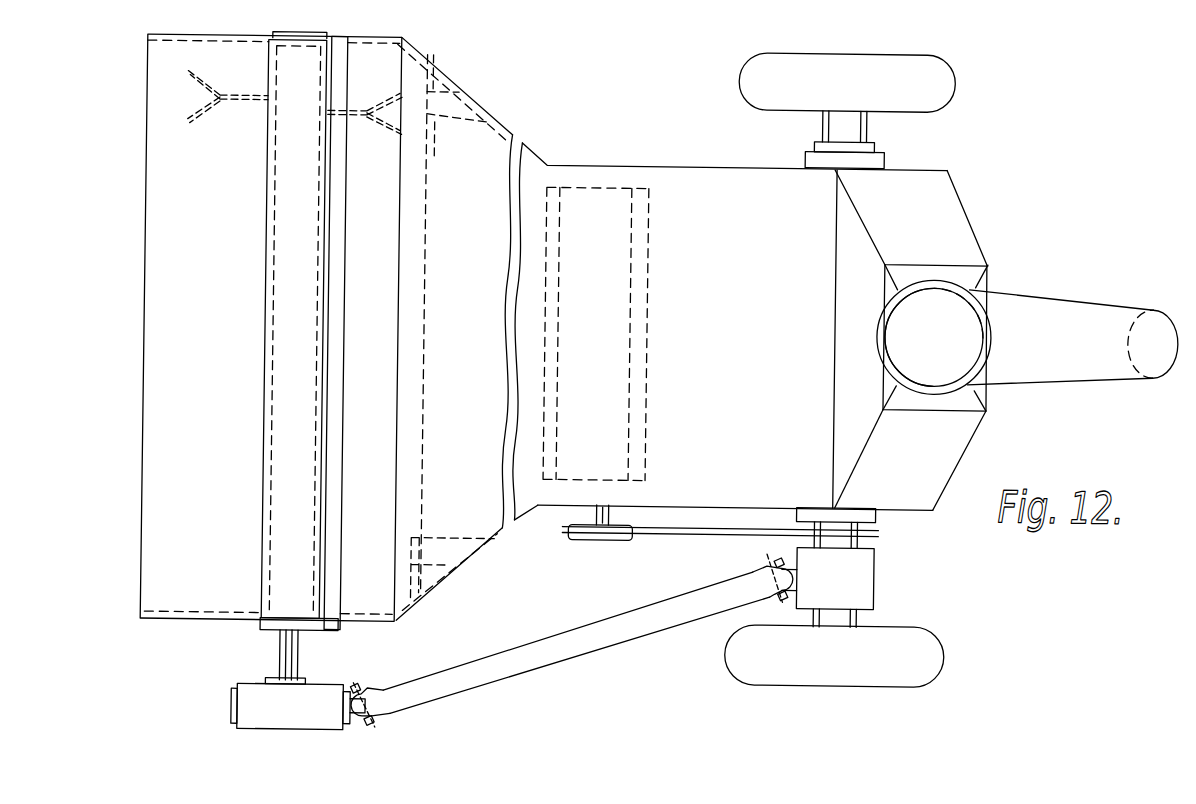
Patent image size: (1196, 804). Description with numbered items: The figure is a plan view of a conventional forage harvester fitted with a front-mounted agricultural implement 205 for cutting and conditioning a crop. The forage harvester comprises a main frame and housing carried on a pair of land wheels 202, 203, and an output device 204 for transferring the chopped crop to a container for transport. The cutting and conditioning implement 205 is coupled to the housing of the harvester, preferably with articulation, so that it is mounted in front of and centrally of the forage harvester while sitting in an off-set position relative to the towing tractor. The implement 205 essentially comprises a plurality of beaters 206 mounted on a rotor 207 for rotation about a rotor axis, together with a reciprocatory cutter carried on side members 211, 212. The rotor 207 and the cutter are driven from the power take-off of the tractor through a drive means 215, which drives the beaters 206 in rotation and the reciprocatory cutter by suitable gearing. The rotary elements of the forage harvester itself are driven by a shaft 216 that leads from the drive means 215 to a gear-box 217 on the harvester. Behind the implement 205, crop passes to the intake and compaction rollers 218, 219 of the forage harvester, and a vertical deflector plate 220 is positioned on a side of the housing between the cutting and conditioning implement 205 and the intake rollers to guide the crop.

The land wheel 202 is at (924, 596).
The land wheel 203 is at (935, 95).
The output device 204 is at (1087, 262).
The agricultural implement for cutting and conditioning a crop 205 is at (138, 323).
The beaters 206 is at (239, 105).
The rotor 207 is at (288, 197).
The side member 211 is at (336, 629).
The side member 212 is at (279, 34).
The drive means 215 is at (257, 696).
The shaft 216 is at (512, 653).
The gear-box 217 is at (868, 582).
The intake and compaction roller 218 is at (578, 200).
The intake and compaction roller 219 is at (638, 199).
The vertical deflector plate 220 is at (455, 109).